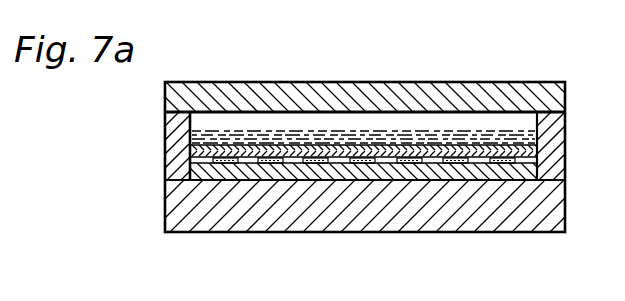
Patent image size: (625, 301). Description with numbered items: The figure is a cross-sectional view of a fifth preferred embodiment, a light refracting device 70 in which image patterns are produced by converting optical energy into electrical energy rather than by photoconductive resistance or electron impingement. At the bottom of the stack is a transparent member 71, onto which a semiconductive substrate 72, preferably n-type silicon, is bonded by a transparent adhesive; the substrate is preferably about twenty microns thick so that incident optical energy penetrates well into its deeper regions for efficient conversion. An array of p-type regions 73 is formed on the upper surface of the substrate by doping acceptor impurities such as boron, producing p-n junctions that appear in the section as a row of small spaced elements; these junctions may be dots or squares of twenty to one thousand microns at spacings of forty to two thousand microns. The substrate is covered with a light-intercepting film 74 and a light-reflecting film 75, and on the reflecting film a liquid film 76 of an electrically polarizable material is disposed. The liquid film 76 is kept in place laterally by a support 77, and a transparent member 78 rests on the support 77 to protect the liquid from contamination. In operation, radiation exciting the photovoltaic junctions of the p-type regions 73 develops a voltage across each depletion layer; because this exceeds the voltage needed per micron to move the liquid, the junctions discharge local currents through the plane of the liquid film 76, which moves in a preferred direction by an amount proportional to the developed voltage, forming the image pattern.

The light refracting device 70 is at (441, 265).
The transparent member 71 is at (168, 232).
The semiconductive substrate 72 is at (195, 168).
The array of p-type regions 73 is at (312, 163).
The light-intercepting film 74 is at (195, 152).
The light-reflecting film 75 is at (190, 141).
The liquid film 76 is at (237, 133).
The support 77 is at (558, 130).
The transparent member 78 is at (537, 84).